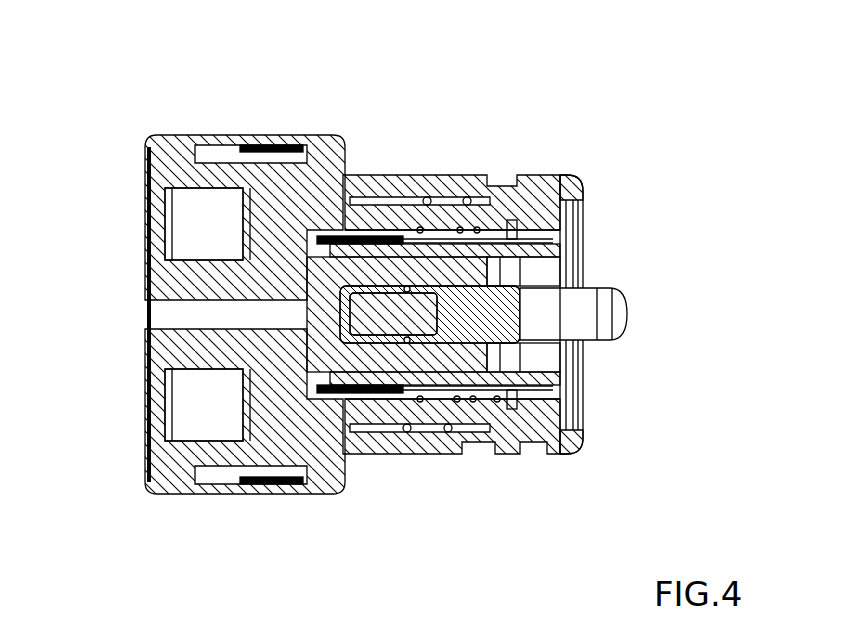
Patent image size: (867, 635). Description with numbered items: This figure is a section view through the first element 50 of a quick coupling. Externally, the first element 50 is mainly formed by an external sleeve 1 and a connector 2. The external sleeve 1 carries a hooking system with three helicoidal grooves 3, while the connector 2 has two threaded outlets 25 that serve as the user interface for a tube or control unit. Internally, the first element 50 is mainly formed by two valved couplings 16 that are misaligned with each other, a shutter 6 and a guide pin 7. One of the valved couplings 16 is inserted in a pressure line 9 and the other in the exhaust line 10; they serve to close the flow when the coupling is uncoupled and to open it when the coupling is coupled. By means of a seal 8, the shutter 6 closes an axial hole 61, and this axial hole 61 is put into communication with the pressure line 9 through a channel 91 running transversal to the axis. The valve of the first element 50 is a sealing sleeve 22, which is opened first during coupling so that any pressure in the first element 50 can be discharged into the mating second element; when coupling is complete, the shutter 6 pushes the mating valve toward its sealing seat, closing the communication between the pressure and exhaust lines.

The first element 50 is at (243, 100).
The connector 2 is at (217, 160).
The threaded outlets 25 is at (172, 230).
The axial hole 61 is at (296, 148).
The external sleeve 1 is at (408, 177).
The valved couplings 16 is at (503, 178).
The pressure line 9 is at (433, 180).
The seal 8 is at (452, 177).
The channel 91 is at (322, 233).
The sealing sleeve 22 is at (547, 178).
The exhaust line 10 is at (362, 440).
The shutter 6 is at (383, 335).
The helicoidal grooves 3 is at (520, 455).
The guide pin 7 is at (591, 310).